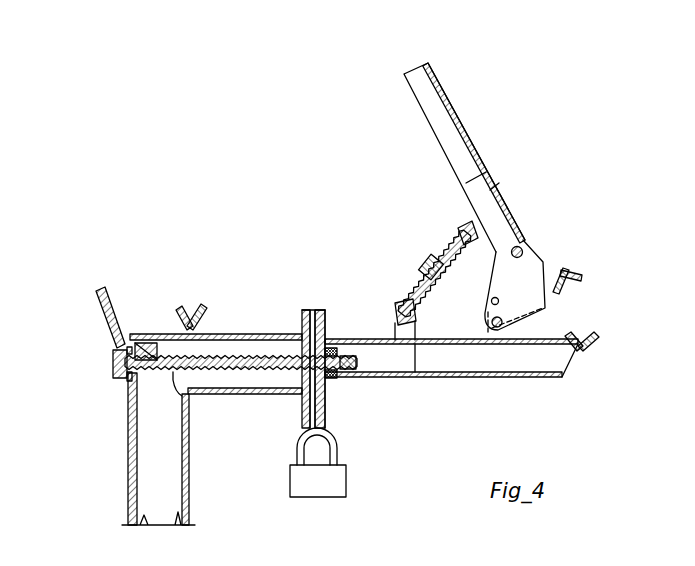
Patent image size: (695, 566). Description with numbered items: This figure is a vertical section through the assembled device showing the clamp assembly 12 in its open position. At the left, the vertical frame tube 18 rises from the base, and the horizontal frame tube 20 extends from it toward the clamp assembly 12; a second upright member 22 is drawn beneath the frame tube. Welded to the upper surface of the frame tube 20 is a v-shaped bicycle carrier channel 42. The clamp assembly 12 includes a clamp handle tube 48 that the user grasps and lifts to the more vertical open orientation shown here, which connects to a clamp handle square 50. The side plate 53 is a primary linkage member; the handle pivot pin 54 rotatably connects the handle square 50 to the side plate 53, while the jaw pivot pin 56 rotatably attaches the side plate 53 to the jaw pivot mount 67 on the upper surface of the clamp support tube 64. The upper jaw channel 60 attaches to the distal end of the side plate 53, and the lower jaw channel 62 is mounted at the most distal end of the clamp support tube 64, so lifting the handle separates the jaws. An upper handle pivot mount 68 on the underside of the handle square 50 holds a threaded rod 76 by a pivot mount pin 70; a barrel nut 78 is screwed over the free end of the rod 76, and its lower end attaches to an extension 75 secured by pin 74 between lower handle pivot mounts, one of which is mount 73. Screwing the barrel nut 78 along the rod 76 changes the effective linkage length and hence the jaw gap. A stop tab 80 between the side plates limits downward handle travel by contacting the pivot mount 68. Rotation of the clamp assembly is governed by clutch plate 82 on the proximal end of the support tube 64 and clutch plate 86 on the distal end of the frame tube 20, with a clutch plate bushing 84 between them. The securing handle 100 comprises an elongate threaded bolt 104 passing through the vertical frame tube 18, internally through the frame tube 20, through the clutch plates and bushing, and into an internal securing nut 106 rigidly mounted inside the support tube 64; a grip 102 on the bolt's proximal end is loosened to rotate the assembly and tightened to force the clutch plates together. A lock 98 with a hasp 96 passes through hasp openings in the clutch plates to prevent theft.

The clamp assembly 12 is at (576, 165).
The vertical frame tube 18 is at (128, 482).
The horizontal frame tube 20 is at (230, 334).
The frame leg 22 is at (177, 396).
The bicycle carrier channel 42 is at (196, 300).
The clamp handle tube 48 is at (447, 98).
The clamp handle square 50 is at (495, 185).
The clamp side plate 53 is at (543, 262).
The handle pivot pin 54 is at (521, 247).
The jaw pivot pin 56 is at (505, 318).
The upper jaw channel 60 is at (584, 276).
The lower jaw channel 62 is at (600, 340).
The clamp support tube 64 is at (500, 377).
The jaw pivot mount 67 is at (538, 312).
The upper handle pivot mount 68 is at (465, 226).
The pivot mount pin 70 is at (461, 238).
The lower handle pivot mount 73 is at (410, 345).
The pin 74 is at (394, 309).
The extension 75 is at (410, 309).
The threaded rod 76 is at (456, 246).
The barrel nut 78 is at (422, 266).
The stop tab 80 is at (492, 298).
The clutch plate 82 is at (365, 305).
The clutch plate bushing 84 is at (335, 268).
The clutch plate 86 is at (300, 320).
The hasp 96 is at (338, 448).
The lock 98 is at (354, 478).
The securing handle 100 is at (80, 300).
The grip 102 is at (98, 316).
The threaded bolt 104 is at (153, 355).
The internal securing nut 106 is at (343, 374).